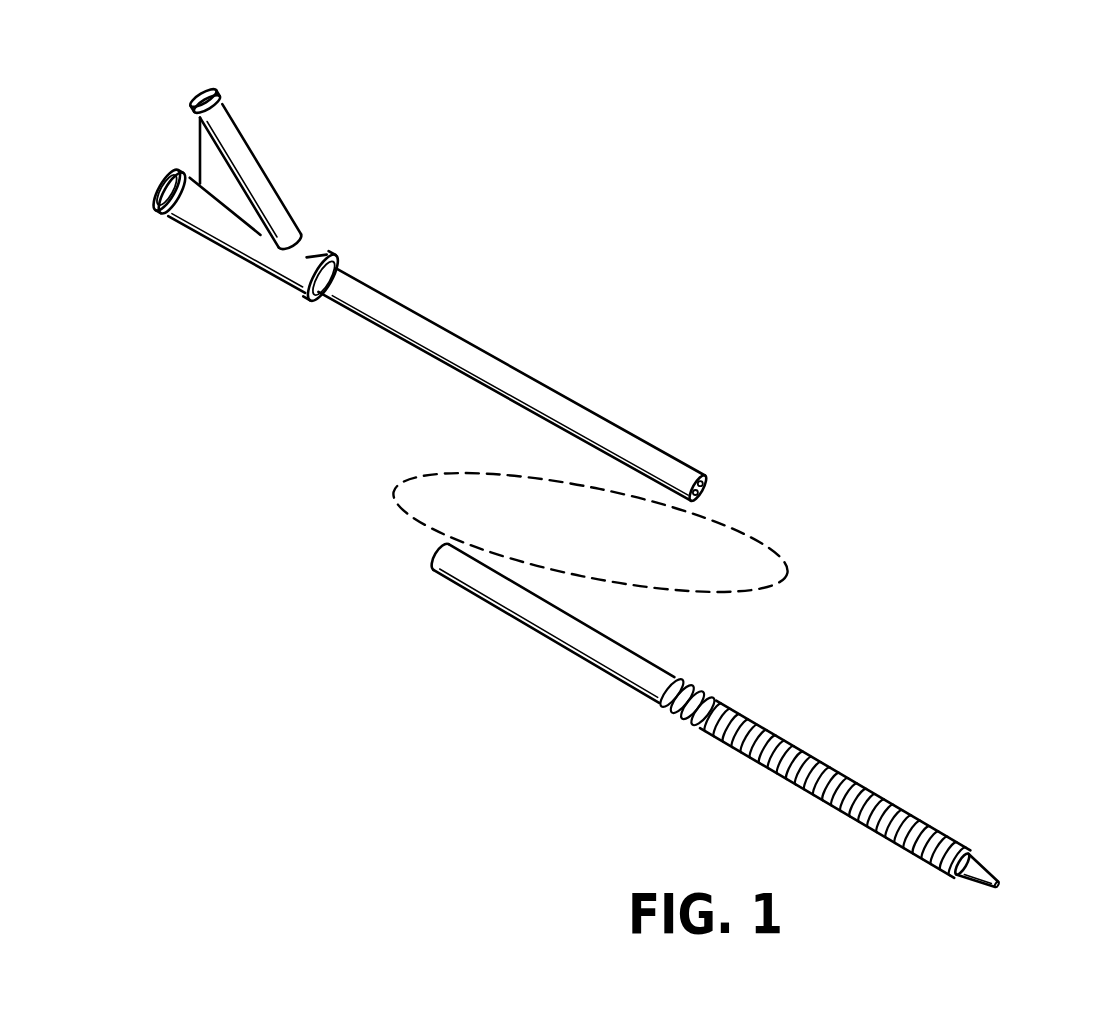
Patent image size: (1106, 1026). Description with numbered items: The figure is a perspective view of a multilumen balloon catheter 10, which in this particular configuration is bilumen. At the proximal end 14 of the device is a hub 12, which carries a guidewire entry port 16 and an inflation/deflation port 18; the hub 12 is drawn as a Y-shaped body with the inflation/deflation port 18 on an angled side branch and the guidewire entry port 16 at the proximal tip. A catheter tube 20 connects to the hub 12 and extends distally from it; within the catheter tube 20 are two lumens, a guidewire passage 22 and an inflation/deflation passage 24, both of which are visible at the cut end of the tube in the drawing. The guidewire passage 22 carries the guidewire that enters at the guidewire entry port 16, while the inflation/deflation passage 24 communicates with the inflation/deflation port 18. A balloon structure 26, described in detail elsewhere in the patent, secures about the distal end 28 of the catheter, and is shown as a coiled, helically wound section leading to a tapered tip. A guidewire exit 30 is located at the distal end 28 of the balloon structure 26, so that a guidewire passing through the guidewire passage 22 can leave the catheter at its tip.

The multilumen balloon catheter 10 is at (845, 252).
The hub 12 is at (225, 211).
The proximal end 14 is at (285, 145).
The guidewire entry port 16 is at (122, 191).
The inflation/deflation port 18 is at (179, 84).
The catheter tube 20 is at (519, 421).
The guidewire passage 22 is at (697, 515).
The inflation/deflation passage 24 is at (697, 462).
The balloon structure 26 is at (847, 763).
The distal end 28 is at (1020, 849).
The guidewire exit 30 is at (1040, 901).